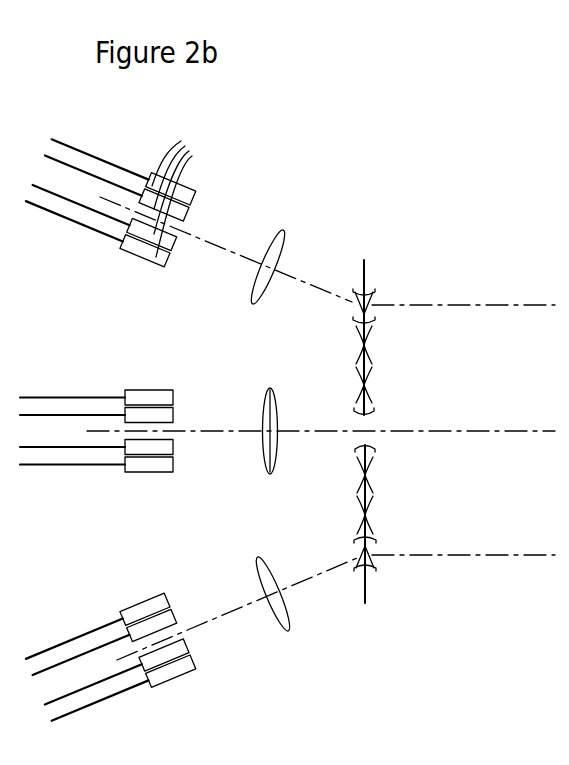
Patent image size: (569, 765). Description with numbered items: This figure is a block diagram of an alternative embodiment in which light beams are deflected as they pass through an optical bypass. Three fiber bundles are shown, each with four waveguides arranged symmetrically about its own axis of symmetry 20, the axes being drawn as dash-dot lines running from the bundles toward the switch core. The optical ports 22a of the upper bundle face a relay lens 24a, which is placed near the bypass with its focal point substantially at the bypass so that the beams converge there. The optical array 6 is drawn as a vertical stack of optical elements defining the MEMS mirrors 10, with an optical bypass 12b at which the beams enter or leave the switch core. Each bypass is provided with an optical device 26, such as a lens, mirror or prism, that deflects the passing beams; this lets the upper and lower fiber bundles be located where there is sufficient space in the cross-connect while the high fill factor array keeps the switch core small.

The optical array 6 is at (365, 272).
The MEMS mirror 10 is at (368, 345).
The optical bypass 12b is at (352, 445).
The axis of symmetry 20 is at (217, 244).
The optical port 22a is at (193, 198).
The relay lens 24a is at (284, 234).
The optical device 26 is at (371, 301).